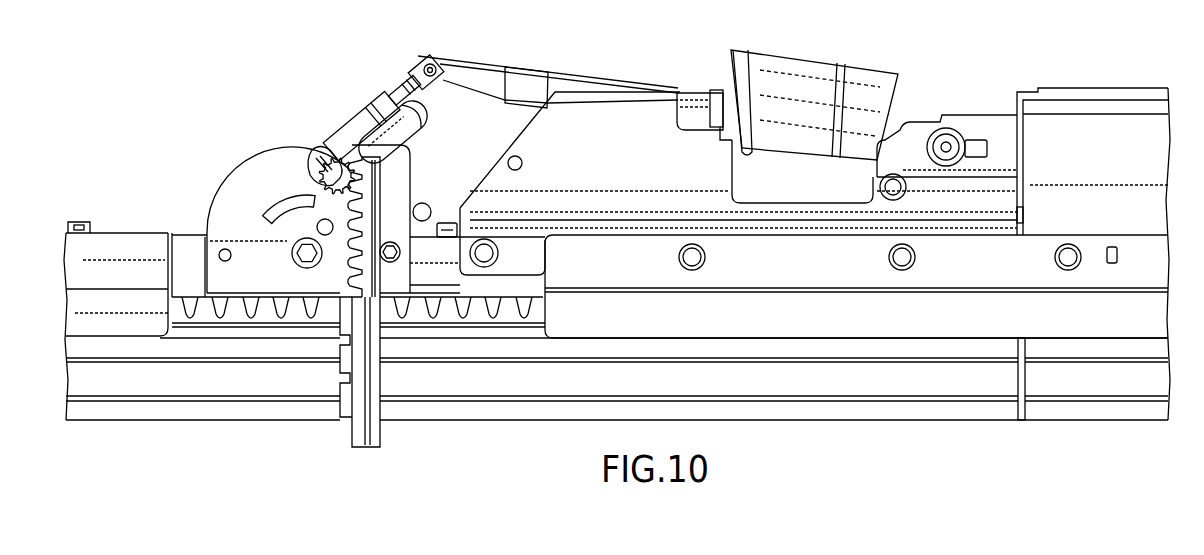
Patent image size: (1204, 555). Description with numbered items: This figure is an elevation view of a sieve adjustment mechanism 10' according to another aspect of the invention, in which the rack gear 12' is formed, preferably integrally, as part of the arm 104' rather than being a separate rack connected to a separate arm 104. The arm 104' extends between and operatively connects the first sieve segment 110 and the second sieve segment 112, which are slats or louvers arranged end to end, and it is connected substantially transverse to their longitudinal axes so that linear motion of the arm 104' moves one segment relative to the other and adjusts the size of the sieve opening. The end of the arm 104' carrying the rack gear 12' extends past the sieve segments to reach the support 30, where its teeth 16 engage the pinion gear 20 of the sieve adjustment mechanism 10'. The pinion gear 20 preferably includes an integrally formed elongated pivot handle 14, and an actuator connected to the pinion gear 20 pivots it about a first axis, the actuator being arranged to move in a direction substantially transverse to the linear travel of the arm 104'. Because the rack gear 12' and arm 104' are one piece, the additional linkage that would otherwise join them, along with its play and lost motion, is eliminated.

The sieve adjustment mechanism 10' is at (607, 226).
The rack gear 12' is at (760, 213).
The pivot handle 14 is at (373, 110).
The teeth 16 is at (815, 60).
The pinion gear 20 is at (313, 147).
The support 30 is at (248, 162).
The arm 104 is at (548, 54).
The arm 104' is at (419, 305).
The first sieve segment 110 is at (165, 252).
The second sieve segment 112 is at (140, 377).